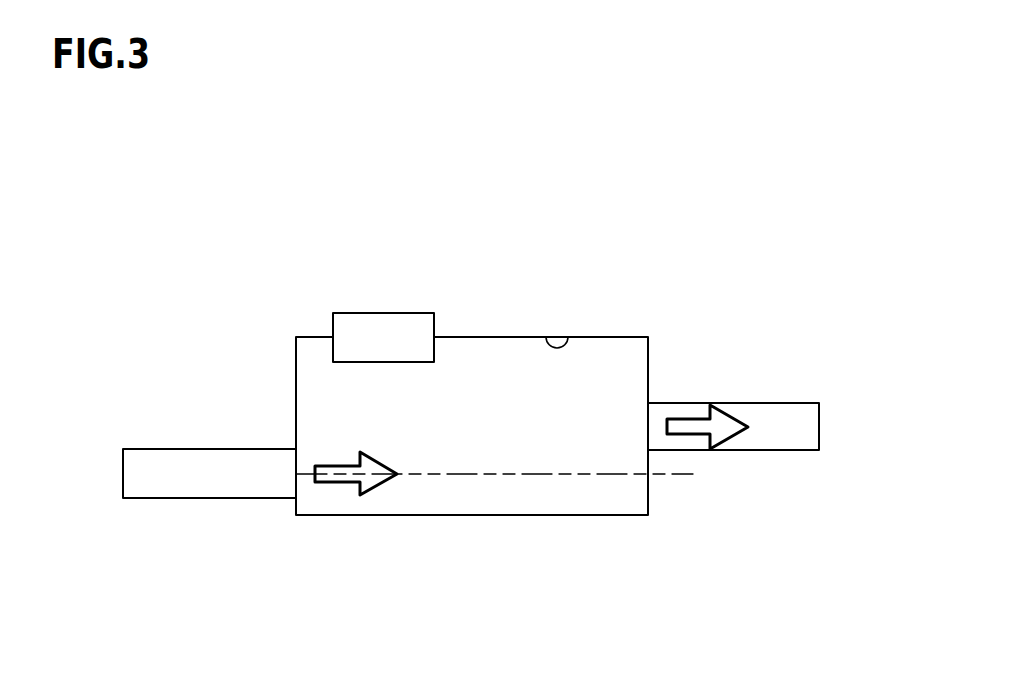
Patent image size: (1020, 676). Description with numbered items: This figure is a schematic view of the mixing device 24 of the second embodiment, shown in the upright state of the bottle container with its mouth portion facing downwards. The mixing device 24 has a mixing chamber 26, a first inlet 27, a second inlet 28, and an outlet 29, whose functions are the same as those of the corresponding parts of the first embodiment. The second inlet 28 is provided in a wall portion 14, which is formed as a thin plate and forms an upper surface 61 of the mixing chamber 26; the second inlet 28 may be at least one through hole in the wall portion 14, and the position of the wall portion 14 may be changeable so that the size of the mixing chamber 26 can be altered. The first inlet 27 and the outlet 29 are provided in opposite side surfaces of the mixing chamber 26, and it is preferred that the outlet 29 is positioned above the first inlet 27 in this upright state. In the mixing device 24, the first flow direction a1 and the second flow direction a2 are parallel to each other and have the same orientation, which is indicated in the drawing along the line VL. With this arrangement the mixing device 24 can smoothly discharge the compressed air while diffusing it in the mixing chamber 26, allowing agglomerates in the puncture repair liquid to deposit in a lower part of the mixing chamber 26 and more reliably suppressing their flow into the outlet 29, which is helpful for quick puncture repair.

The mixing device 24 is at (662, 232).
The wall portion 14 is at (470, 337).
The second inlet 28 is at (353, 363).
The mixing chamber 26 is at (530, 388).
The upper surface 61 is at (568, 337).
The outlet 29 is at (648, 428).
The first inlet 27 is at (296, 486).
The virtual line VL is at (533, 474).
The first flow direction a1 is at (377, 487).
The second flow direction a2 is at (730, 438).